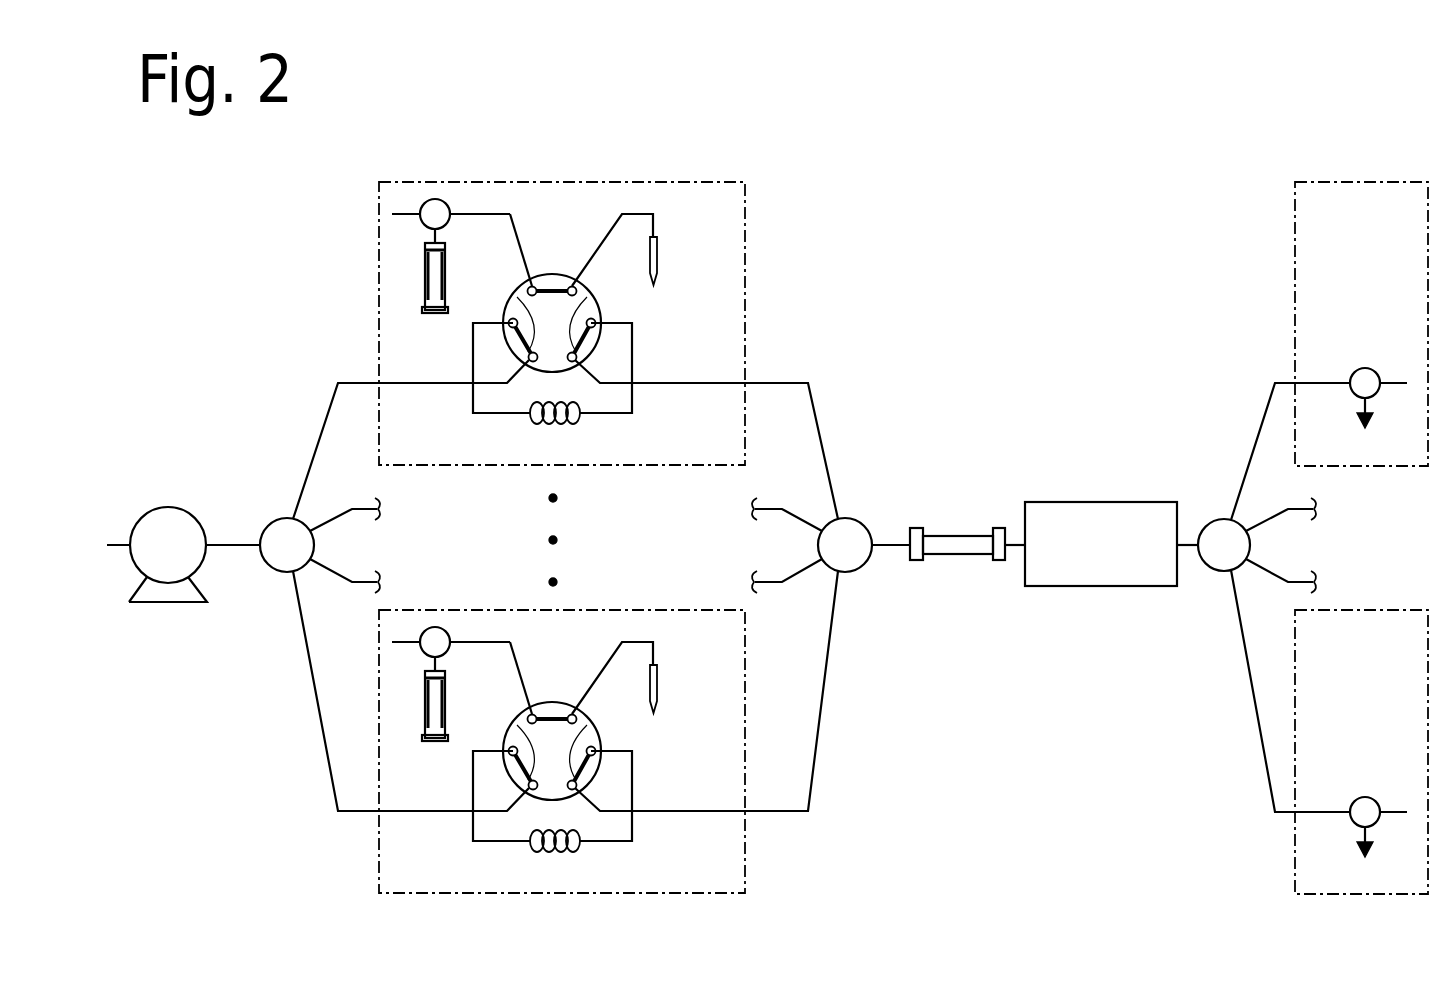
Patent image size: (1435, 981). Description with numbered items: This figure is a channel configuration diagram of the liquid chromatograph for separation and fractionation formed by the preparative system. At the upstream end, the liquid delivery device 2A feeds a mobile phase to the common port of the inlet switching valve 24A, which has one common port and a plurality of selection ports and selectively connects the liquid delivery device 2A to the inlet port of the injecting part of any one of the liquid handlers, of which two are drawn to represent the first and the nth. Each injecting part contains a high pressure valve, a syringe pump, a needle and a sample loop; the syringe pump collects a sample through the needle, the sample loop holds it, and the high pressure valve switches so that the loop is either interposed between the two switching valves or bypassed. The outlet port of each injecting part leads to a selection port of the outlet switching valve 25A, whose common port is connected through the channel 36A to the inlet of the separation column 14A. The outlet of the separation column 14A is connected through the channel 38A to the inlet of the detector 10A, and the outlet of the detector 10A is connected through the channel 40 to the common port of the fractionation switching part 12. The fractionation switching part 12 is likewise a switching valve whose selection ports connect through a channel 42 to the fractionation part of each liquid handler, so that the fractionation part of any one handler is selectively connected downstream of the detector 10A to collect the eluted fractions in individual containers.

The liquid delivery device 2A is at (178, 505).
The inlet switching valve 24A is at (278, 515).
The outlet switching valve 25A is at (853, 513).
The channel 36A is at (892, 547).
The separation column 14A is at (967, 535).
The channel 38A is at (1013, 547).
The detector 10A is at (1075, 502).
The channel 40 is at (1188, 547).
The fractionation switching part 12 is at (1215, 515).
The channel 42 is at (1272, 512).